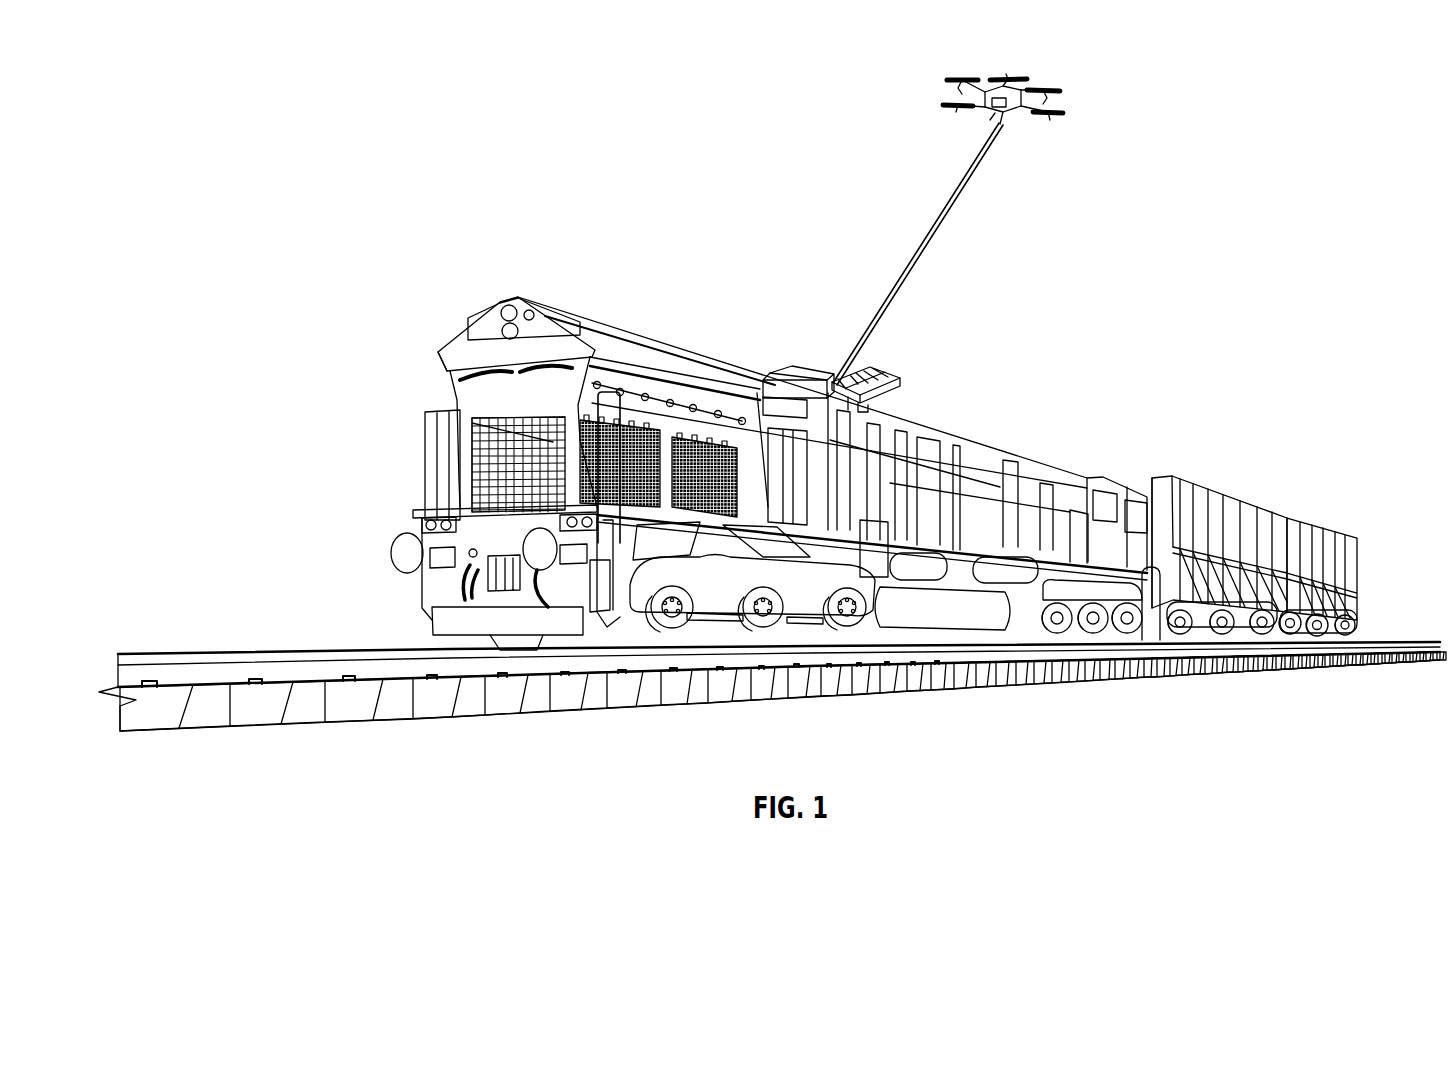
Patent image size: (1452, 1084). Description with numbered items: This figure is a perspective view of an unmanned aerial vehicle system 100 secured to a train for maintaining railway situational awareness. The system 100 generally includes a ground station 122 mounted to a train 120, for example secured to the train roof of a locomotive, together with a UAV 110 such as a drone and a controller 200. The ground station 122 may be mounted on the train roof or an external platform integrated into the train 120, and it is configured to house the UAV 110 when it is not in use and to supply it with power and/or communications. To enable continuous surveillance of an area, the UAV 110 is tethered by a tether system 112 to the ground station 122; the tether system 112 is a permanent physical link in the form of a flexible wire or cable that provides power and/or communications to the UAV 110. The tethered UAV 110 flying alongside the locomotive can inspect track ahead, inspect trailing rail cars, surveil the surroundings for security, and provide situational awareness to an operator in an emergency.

The unmanned aerial vehicle system 100 is at (700, 99).
The UAV 110 is at (1055, 80).
The tether system 112 is at (915, 250).
The train 120 is at (1043, 460).
The ground station 122 is at (897, 377).
The controller 200 is at (805, 375).